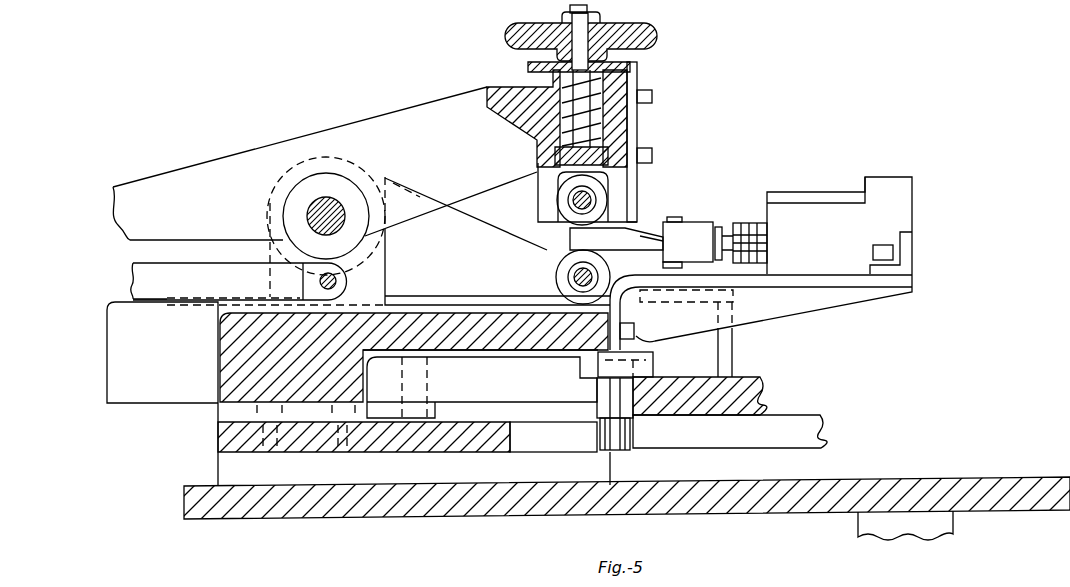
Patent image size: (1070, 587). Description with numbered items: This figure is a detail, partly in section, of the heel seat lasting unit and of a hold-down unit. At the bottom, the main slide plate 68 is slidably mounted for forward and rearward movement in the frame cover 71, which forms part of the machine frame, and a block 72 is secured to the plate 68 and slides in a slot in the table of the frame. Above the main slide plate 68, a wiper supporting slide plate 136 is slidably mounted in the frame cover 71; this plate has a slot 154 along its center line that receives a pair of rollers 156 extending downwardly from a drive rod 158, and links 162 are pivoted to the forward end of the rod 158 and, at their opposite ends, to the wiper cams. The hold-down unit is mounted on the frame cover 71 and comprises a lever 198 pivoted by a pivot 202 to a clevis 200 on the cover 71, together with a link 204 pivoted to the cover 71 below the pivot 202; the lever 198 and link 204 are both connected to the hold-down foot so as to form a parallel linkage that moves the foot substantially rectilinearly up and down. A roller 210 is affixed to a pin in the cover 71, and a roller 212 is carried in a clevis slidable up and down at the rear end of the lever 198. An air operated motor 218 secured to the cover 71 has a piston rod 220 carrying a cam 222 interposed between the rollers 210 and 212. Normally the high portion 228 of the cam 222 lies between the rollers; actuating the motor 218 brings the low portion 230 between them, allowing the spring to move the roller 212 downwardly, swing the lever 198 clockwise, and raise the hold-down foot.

The main slide plate 68 is at (443, 502).
The frame cover 71 is at (243, 352).
The block 72 is at (955, 532).
The wiper supporting slide plate 136 is at (232, 442).
The slot 154 is at (778, 428).
The rollers 156 is at (613, 437).
The drive rod 158 is at (740, 392).
The links 162 is at (515, 387).
The lever 198 is at (420, 115).
The clevis 200 is at (372, 268).
The pivot 202 is at (310, 204).
The link 204 is at (223, 280).
The roller 210 is at (561, 275).
The roller 212 is at (604, 202).
The air operated motor 218 is at (790, 215).
The piston rod 220 is at (731, 227).
The cam 222 is at (680, 242).
The high portion 228 is at (572, 240).
The low portion 230 is at (647, 245).